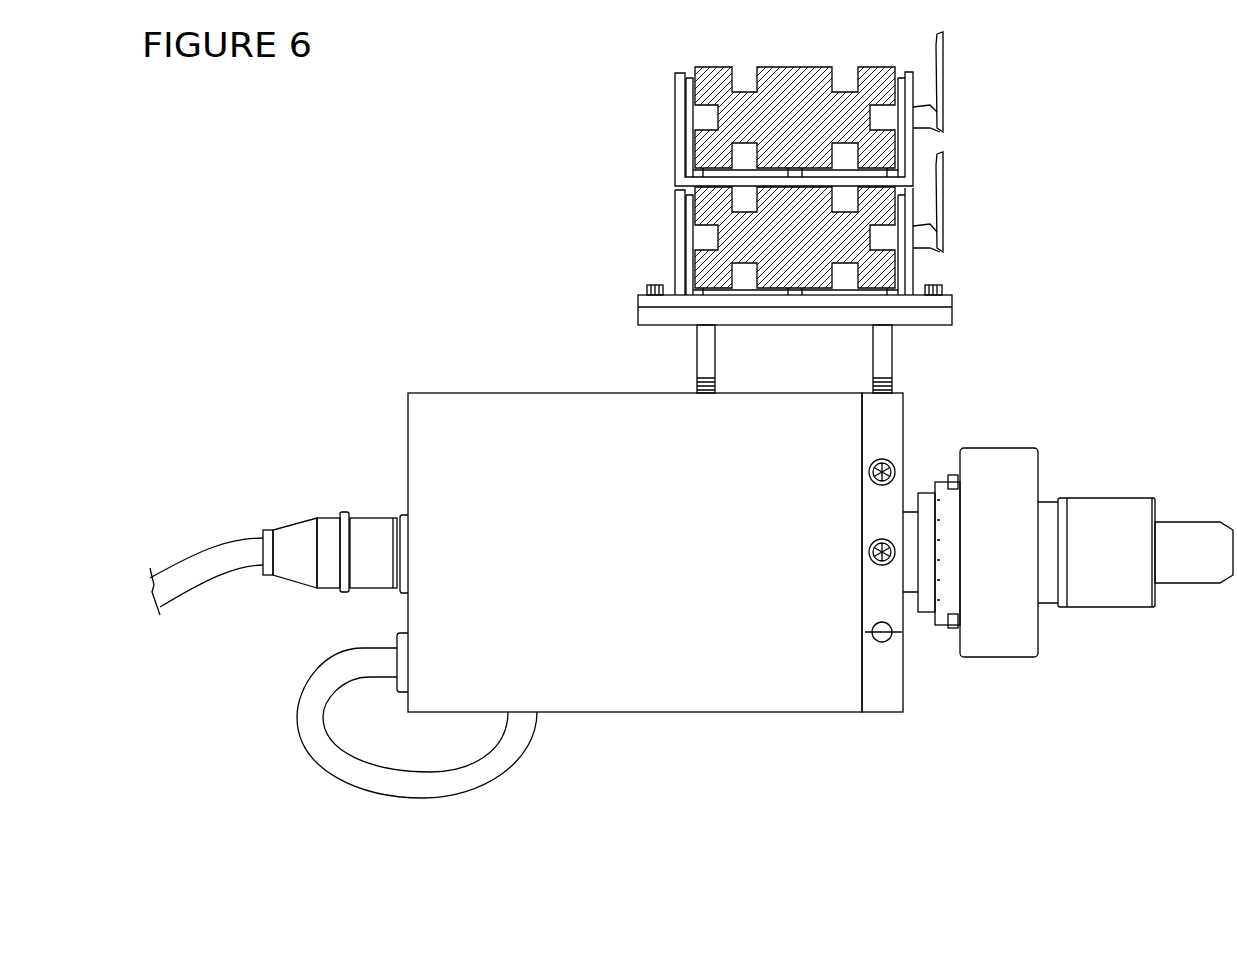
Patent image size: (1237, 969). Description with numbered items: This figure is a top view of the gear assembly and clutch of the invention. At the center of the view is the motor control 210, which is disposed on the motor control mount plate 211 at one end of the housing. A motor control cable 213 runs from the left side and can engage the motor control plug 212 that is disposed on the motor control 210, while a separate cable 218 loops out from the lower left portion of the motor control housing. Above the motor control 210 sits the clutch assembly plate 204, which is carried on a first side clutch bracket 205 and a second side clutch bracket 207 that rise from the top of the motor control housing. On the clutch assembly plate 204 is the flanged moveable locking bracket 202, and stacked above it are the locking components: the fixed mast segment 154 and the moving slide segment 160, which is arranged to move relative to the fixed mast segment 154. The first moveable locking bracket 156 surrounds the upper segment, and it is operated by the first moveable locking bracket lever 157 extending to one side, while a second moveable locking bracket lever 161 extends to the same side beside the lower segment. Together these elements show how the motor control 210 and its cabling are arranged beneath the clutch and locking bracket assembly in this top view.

The fixed mast segment 154 is at (712, 80).
The first moveable locking bracket 156 is at (680, 140).
The first moveable locking bracket lever 157 is at (943, 115).
The moving slide segment 160 is at (710, 262).
The second moveable locking bracket lever 161 is at (943, 235).
The flanged moveable locking bracket 202 is at (948, 298).
The clutch assembly plate 204 is at (793, 317).
The first side clutch bracket 205 is at (887, 345).
The second side clutch bracket 207 is at (703, 345).
The motor control 210 is at (668, 688).
The motor control mount plate 211 is at (888, 685).
The motor control plug 212 is at (370, 535).
The motor control cable 213 is at (208, 591).
The cable 218 is at (478, 783).